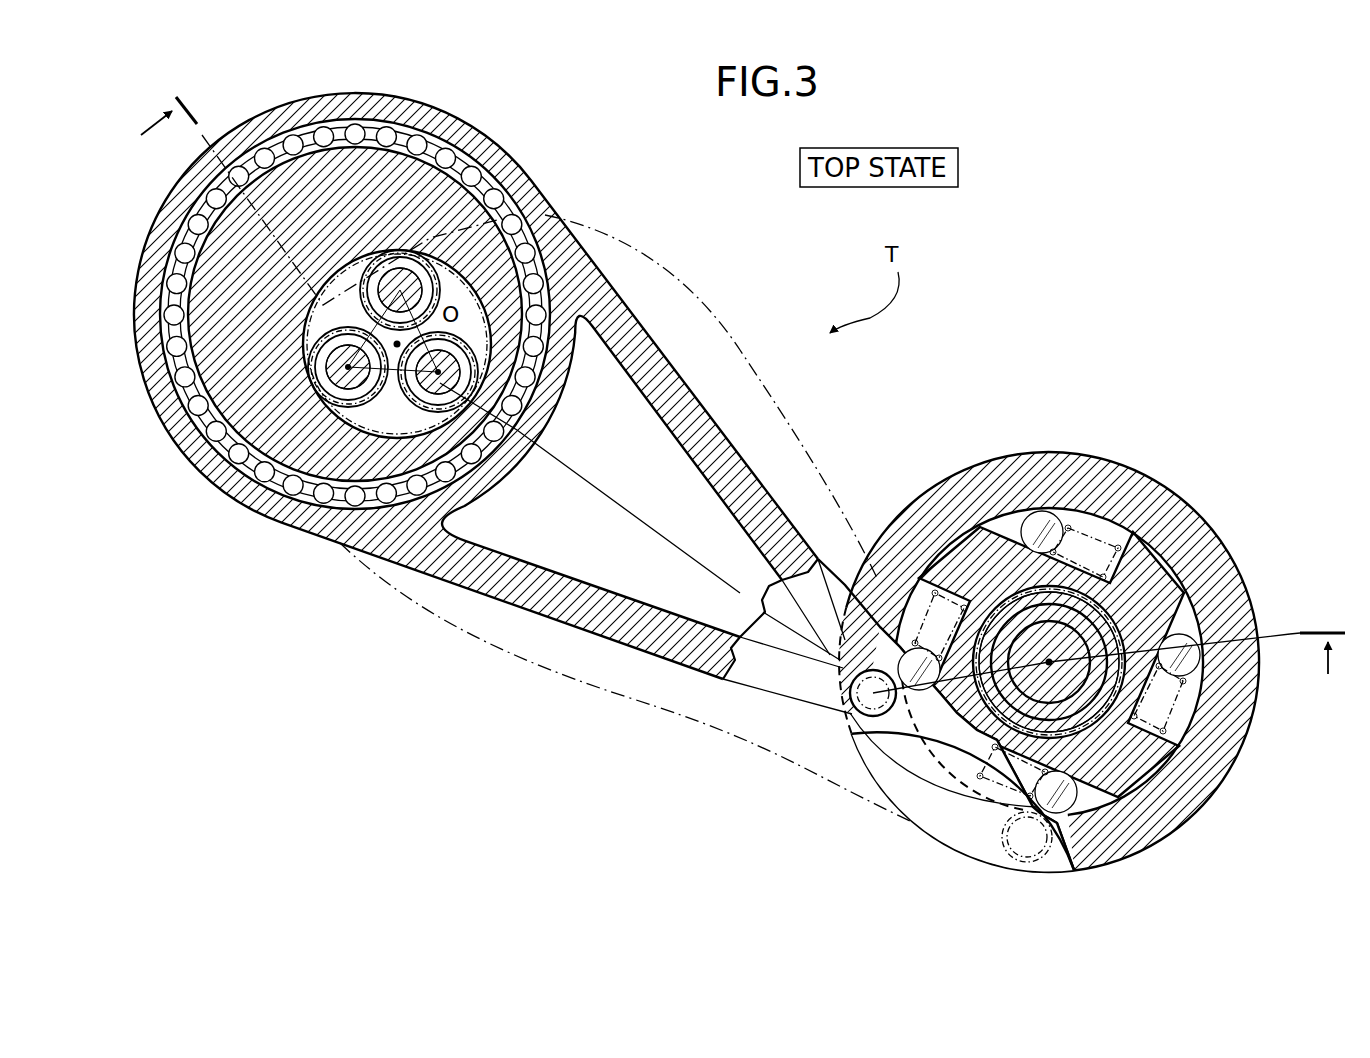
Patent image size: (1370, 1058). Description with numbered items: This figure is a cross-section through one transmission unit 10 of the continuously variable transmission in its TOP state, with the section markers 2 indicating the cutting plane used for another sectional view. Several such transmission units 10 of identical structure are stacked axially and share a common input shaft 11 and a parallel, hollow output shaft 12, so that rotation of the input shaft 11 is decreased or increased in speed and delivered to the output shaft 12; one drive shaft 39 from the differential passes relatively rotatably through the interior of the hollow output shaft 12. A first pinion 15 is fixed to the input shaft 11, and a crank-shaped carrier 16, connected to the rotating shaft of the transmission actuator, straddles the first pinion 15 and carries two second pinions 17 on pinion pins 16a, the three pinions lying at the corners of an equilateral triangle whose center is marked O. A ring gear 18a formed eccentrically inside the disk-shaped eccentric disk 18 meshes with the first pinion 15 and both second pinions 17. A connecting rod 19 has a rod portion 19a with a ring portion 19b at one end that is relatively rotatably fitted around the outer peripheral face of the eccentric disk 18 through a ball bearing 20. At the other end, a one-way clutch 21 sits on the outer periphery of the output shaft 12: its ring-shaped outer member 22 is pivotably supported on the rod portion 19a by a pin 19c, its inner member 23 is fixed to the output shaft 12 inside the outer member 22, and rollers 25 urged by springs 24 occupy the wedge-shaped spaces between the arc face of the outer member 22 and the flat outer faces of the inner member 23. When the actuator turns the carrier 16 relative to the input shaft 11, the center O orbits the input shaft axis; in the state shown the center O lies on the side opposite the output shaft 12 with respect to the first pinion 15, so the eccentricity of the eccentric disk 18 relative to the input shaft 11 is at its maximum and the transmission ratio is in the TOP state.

The section line 2- 2 is at (742, 399).
The transmission unit 10 is at (853, 408).
The input shaft 11 is at (565, 300).
The output shaft 12 is at (1068, 598).
The first pinion 15 is at (455, 500).
The carrier 16 is at (322, 317).
The pinion pin 16a is at (402, 284).
The second pinion 17 is at (430, 290).
The eccentric disk 18 is at (362, 232).
The ring gear 18a is at (318, 312).
The connecting rod 19 is at (703, 396).
The rod portion 19a is at (718, 455).
The ring portion 19b is at (440, 122).
The pin 19c is at (850, 718).
The ball bearing 20 is at (383, 128).
The one-way clutch 21 is at (1262, 722).
The outer member 22 is at (1203, 516).
The inner member 23 is at (945, 586).
The spring 24 is at (912, 648).
The roller 25 is at (1052, 522).
The drive shaft 39 is at (1122, 603).